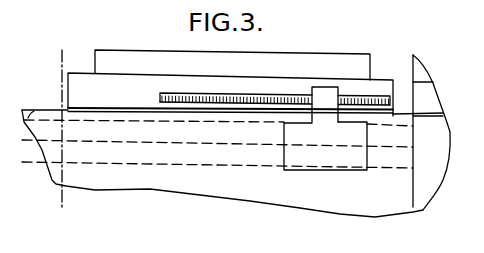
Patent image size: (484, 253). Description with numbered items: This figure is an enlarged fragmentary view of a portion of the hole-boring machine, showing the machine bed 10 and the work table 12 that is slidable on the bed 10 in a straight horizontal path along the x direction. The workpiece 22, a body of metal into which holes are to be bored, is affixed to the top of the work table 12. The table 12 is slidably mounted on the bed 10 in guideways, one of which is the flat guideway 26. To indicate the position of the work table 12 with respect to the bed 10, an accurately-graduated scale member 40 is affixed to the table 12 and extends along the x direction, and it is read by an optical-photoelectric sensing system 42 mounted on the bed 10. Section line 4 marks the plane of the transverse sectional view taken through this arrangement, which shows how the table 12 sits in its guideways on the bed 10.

The section line 4- 4 is at (90, 61).
The machine bed 10 is at (242, 198).
The work table 12 is at (115, 82).
The workpiece 22 is at (342, 52).
The flat guideway 26 is at (33, 109).
The scale member 40 is at (220, 92).
The optical-photoelectric sensing system 42 is at (352, 160).